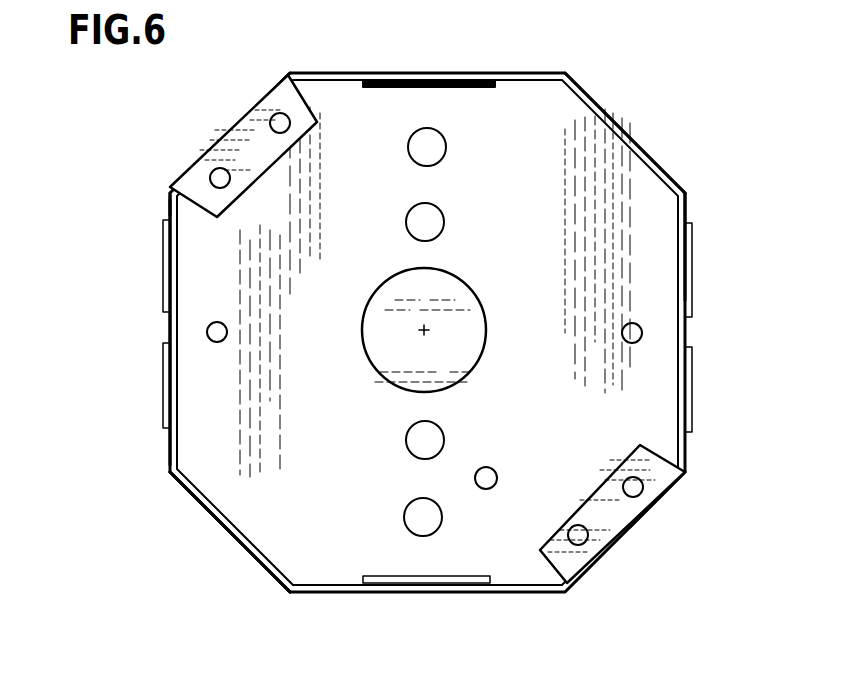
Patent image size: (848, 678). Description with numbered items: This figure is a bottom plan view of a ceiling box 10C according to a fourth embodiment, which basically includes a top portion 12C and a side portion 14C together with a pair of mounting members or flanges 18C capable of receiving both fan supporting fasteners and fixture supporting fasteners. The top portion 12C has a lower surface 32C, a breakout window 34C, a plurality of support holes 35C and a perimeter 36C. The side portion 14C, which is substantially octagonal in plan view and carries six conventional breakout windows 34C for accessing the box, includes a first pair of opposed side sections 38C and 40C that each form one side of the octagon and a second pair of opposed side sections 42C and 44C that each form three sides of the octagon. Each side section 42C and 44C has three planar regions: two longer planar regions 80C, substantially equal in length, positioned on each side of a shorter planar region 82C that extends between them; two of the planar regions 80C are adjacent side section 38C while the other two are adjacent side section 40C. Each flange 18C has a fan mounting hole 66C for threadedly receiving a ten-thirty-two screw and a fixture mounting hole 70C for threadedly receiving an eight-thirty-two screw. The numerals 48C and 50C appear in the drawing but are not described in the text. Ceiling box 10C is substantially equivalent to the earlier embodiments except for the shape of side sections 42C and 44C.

The ceiling box 10C is at (406, 333).
The top portion 12C is at (628, 255).
The side portion 14C is at (165, 444).
The mounting members or flanges 18C is at (198, 178).
The lower surface 32C is at (312, 418).
The breakout window 34C is at (395, 302).
The support holes 35C is at (415, 152).
The perimeter 36C is at (168, 210).
The side section 38C is at (263, 98).
The side section 40C is at (663, 495).
The side section 42C is at (200, 510).
The side section 44C is at (622, 122).
The corner wall 48C is at (270, 570).
The center of bottom wall 50C is at (427, 327).
The fan mounting hole 66C is at (227, 183).
The fixture mounting hole 70C is at (283, 127).
The planar regions 80C is at (465, 72).
The planar region 82C is at (660, 160).